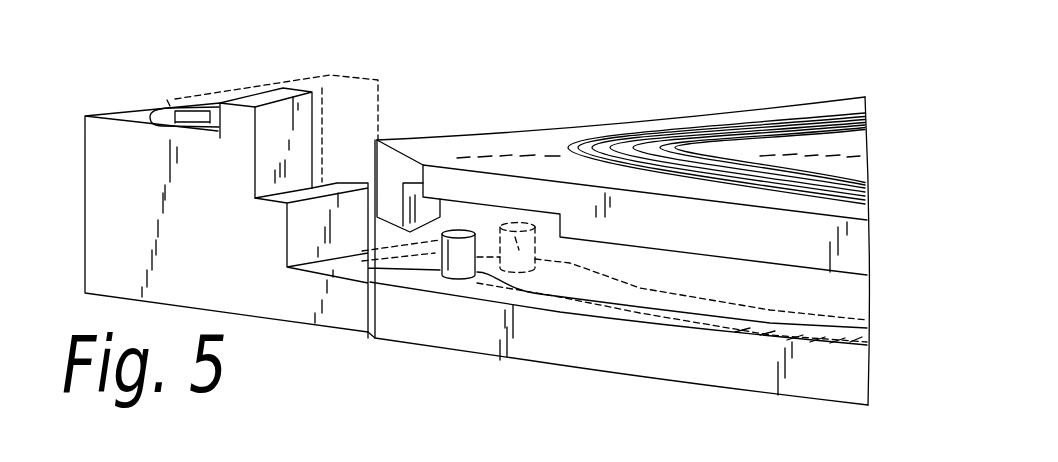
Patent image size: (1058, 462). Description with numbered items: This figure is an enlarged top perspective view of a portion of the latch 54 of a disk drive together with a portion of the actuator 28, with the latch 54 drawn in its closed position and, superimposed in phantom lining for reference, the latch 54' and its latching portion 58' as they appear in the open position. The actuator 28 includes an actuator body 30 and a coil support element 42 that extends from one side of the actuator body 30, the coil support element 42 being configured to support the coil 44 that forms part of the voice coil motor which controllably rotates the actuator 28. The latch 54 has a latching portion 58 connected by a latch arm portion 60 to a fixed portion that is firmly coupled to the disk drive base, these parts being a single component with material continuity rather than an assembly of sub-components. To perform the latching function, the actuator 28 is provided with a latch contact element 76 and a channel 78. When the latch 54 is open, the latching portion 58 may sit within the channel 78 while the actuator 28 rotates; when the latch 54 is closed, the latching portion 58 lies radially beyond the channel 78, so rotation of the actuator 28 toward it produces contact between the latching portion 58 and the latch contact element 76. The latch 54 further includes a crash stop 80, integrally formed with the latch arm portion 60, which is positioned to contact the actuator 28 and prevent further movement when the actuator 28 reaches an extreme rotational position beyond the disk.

The actuator 28 is at (803, 107).
The actuator body 30 is at (850, 100).
The coil support element 42 is at (548, 140).
The coil 44 is at (745, 127).
The latch 54 is at (672, 353).
The latch in open position 54' is at (672, 344).
The latching portion 58 is at (458, 317).
The latching portion in open position 58' is at (516, 318).
The latch arm portion 60 is at (580, 360).
The latch contact element 76 is at (425, 212).
The channel 78 is at (447, 218).
The crash stop 80 is at (272, 123).